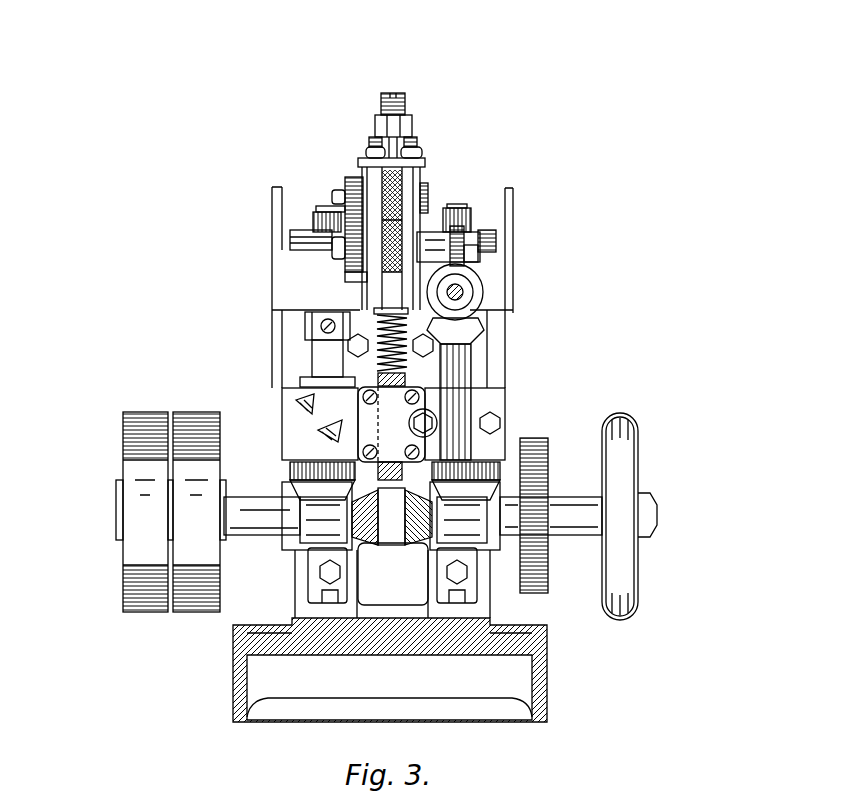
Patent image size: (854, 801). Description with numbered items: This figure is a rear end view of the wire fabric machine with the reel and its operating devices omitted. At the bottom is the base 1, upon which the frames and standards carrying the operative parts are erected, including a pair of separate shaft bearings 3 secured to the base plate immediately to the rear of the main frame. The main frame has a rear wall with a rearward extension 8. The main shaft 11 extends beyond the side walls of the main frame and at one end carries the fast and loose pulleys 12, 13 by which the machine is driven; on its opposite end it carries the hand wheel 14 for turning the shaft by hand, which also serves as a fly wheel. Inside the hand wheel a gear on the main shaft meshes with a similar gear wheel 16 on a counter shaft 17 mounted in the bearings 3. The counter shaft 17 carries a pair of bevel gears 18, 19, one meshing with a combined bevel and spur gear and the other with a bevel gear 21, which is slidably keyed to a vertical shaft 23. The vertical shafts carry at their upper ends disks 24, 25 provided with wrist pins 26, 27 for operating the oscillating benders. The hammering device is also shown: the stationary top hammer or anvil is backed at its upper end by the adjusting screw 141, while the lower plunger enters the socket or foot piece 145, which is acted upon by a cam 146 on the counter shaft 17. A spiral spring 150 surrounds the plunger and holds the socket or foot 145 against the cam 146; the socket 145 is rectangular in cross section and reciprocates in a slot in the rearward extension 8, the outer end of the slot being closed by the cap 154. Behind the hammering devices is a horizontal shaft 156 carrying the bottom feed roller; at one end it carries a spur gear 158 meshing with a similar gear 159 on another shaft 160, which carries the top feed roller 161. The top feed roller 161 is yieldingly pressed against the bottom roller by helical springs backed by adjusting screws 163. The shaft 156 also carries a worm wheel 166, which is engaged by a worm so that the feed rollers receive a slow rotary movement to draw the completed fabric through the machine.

The base 1 is at (390, 670).
The shaft bearings 3 is at (302, 576).
The rearward extension 8 is at (320, 424).
The main shaft 11 is at (256, 527).
The fast pulley 12 is at (142, 512).
The loose pulley 13 is at (197, 512).
The hand wheel 14 is at (629, 516).
The gear wheel 16 is at (536, 437).
The counter shaft 17 is at (548, 512).
The bevel gear 18 is at (414, 548).
The bevel gear 19 is at (372, 548).
The bevel gear 21 is at (288, 468).
The vertical shaft 23 is at (322, 352).
The disk 24 is at (481, 231).
The disk 25 is at (300, 230).
The wrist pin 26 is at (466, 207).
The wrist pin 27 is at (323, 211).
The adjusting screw 141 is at (383, 92).
The socket or foot piece 145 is at (410, 376).
The cam 146 is at (391, 550).
The spiral spring 150 is at (380, 345).
The cap 154 is at (391, 424).
The horizontal shaft 156 is at (481, 253).
The spur gear 158 is at (345, 268).
The spur gear 159 is at (351, 176).
The shaft 160 is at (430, 192).
The top feed roller 161 is at (416, 186).
The adjusting screws 163 is at (417, 137).
The worm wheel 166 is at (470, 258).